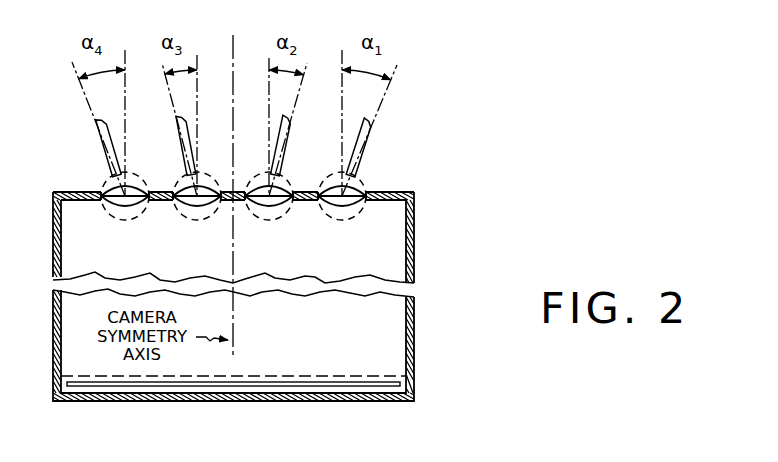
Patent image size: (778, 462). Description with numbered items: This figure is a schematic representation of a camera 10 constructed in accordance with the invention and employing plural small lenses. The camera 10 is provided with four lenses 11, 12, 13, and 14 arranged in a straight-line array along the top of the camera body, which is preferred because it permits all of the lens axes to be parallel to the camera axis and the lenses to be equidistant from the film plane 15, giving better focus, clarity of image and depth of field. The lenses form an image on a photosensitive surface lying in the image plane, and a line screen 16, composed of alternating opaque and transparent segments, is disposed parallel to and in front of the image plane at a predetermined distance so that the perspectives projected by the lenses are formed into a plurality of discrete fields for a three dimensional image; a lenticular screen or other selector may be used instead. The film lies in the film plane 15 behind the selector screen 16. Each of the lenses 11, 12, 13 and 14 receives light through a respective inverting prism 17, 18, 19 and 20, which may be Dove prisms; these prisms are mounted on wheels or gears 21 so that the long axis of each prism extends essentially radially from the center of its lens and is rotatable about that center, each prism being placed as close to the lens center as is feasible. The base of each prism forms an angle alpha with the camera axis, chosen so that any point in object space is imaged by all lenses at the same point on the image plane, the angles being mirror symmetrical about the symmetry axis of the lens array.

The camera 10 is at (414, 231).
The lens 11 is at (102, 200).
The lens 12 is at (196, 206).
The lens 13 is at (265, 206).
The lens 14 is at (358, 204).
The film plane 15 is at (286, 387).
The line screen 16 is at (363, 376).
The inverting prism 17 is at (104, 147).
The inverting prism 18 is at (187, 148).
The inverting prism 19 is at (289, 148).
The inverting prism 20 is at (364, 152).
The wheels or gears 21 is at (185, 214).